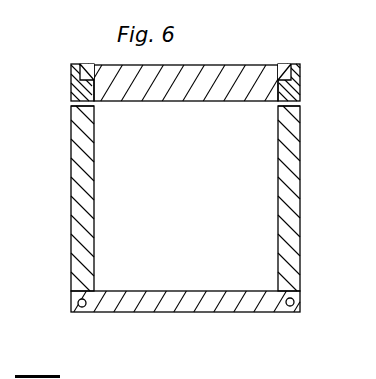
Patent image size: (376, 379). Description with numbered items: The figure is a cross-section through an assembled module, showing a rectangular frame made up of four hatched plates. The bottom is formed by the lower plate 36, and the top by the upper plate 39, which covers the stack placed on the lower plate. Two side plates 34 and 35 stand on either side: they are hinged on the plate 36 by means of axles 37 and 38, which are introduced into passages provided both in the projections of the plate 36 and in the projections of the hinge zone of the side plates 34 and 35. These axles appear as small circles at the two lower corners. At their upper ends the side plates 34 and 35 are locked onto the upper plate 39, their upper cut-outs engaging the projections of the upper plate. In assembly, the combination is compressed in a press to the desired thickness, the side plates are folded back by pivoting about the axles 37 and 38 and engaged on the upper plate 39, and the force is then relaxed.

The side plate 34 is at (285, 216).
The side plate 35 is at (90, 213).
The plate 36 is at (181, 296).
The axle 37 is at (295, 301).
The axle 38 is at (80, 303).
The plate 39 is at (190, 76).